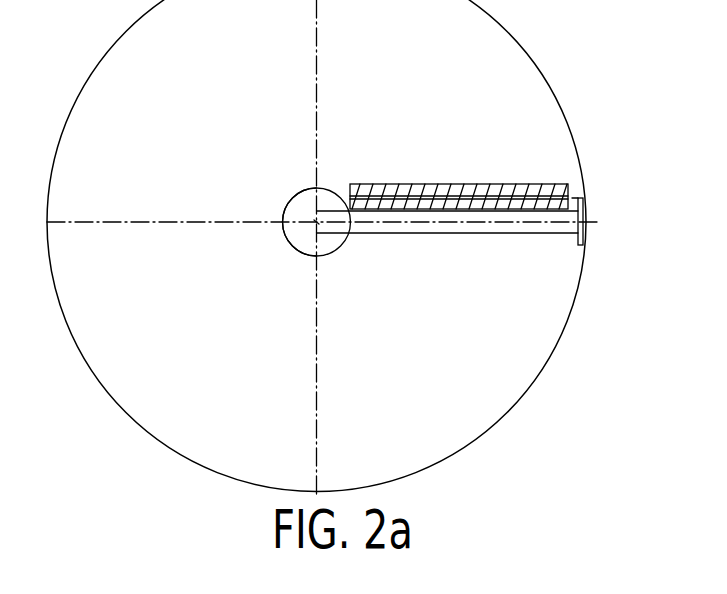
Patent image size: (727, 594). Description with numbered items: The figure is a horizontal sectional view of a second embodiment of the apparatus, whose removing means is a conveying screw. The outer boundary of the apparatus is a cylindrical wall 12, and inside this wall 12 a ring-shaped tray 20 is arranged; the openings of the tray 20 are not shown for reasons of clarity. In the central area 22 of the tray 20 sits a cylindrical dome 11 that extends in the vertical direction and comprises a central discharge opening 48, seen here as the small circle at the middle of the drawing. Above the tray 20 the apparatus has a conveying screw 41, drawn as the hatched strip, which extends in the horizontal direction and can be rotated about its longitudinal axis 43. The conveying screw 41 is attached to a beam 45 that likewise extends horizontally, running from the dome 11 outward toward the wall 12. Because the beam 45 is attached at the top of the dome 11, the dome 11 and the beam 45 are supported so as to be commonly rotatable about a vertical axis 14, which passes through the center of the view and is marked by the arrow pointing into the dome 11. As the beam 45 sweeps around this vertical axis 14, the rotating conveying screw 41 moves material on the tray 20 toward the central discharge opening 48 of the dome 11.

The cylindrical wall 12 is at (517, 43).
The ring-shaped tray 20 is at (422, 359).
The cylindrical dome 11 is at (340, 248).
The central discharge opening 48 is at (290, 209).
The central area 22 is at (290, 259).
The vertical axis 14 is at (313, 212).
The beam 45 is at (503, 228).
The conveying screw 41 is at (497, 185).
The longitudinal axis 43 is at (597, 198).